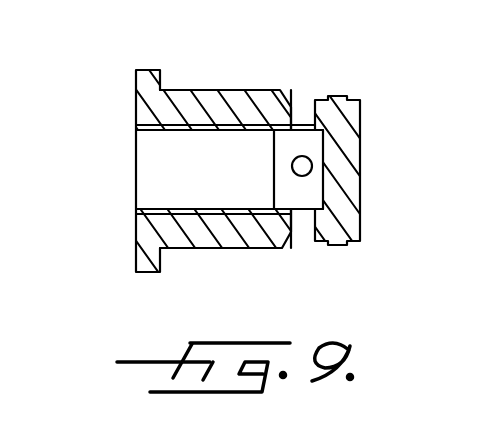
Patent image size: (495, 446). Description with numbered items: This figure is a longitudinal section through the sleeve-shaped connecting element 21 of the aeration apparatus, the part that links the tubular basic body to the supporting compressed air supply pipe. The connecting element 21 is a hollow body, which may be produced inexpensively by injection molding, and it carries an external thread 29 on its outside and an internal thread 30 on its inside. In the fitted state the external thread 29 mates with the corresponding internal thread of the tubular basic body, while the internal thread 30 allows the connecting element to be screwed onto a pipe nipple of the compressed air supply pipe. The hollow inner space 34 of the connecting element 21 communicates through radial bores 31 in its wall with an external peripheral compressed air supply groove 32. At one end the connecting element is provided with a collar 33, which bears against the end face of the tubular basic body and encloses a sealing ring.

The connecting element 21 is at (247, 166).
The external thread 29 is at (217, 249).
The internal thread 30 is at (212, 175).
The radial bores 31 is at (301, 115).
The compressed air supply groove 32 is at (313, 95).
The collar 33 is at (146, 74).
The inner space 34 is at (200, 169).